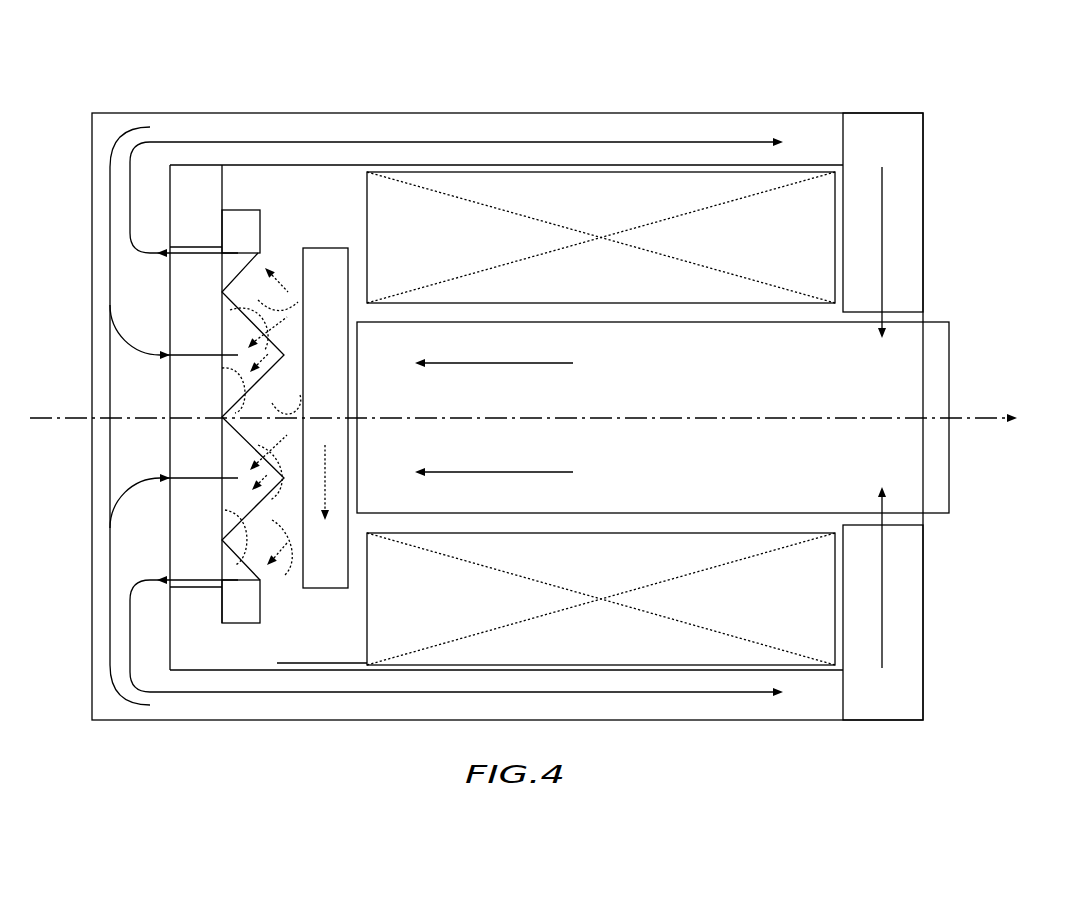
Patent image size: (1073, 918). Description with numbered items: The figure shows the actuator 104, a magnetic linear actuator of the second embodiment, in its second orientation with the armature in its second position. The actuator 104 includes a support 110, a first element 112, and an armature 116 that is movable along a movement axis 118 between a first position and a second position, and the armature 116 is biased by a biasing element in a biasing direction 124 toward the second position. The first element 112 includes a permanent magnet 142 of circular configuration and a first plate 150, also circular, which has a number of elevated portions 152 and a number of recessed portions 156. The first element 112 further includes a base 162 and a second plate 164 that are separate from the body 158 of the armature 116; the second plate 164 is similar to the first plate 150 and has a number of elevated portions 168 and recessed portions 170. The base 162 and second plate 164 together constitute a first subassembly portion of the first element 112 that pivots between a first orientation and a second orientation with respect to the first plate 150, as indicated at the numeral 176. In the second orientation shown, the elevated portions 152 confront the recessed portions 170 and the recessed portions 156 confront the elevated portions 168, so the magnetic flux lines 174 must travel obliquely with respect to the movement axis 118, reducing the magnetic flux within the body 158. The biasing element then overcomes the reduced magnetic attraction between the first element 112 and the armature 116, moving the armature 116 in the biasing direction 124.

The actuator 104 is at (740, 86).
The support 110 is at (333, 93).
The first element 112 is at (240, 195).
The armature 116 is at (937, 320).
The movement axis 118 is at (845, 418).
The biasing direction 124 is at (975, 418).
The permanent magnet 142 is at (200, 592).
The first plate 150 is at (245, 634).
The elevated portions 152 is at (240, 318).
The recessed portions 156 is at (243, 265).
The body 158 is at (525, 322).
The base 162 is at (350, 282).
The second plate 164 is at (293, 252).
The elevated portions 168 is at (290, 305).
The recessed portions 170 is at (303, 348).
The magnetic flux lines 174 is at (412, 143).
The movement between first and second orientations 176 is at (335, 472).